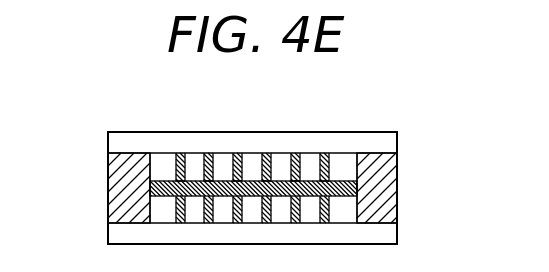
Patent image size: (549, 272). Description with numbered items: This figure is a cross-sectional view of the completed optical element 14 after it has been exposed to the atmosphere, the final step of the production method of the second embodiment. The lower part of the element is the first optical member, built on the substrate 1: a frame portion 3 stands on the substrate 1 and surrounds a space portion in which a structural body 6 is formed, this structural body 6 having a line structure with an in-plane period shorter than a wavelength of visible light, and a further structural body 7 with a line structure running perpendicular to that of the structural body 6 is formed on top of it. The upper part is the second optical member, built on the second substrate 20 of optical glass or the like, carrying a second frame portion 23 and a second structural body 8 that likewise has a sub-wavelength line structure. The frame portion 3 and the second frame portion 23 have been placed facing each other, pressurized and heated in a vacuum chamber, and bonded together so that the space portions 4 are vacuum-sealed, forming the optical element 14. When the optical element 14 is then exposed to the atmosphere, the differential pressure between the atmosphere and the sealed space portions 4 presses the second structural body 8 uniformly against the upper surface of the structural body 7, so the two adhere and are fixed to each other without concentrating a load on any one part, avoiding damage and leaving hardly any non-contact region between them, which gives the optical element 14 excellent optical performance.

The optical element 14 is at (398, 91).
The second substrate 20 is at (390, 143).
The substrate 1 is at (385, 236).
The space portions 4 is at (343, 160).
The frame portion 3 is at (387, 208).
The second frame portion 23 is at (387, 162).
The structural body 7 is at (150, 186).
The second structural body 8 is at (211, 155).
The structural body 6 is at (152, 212).